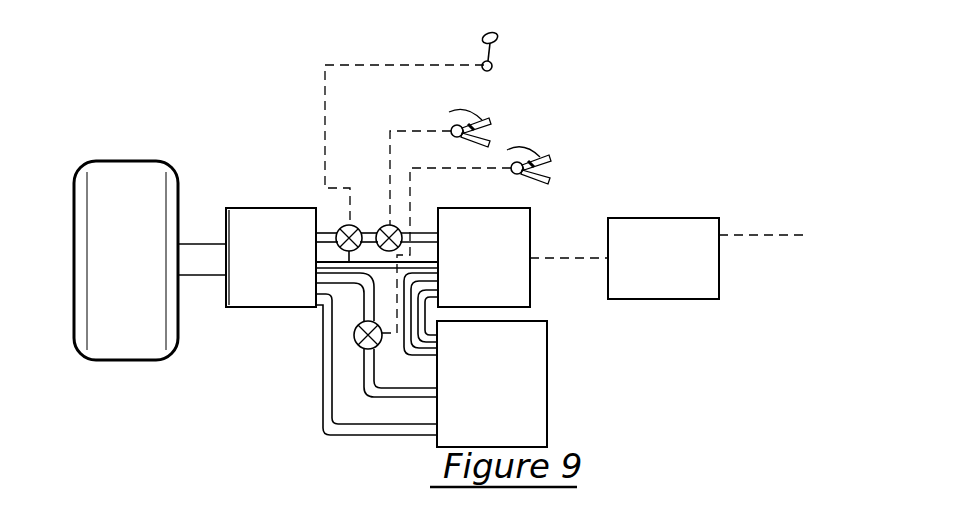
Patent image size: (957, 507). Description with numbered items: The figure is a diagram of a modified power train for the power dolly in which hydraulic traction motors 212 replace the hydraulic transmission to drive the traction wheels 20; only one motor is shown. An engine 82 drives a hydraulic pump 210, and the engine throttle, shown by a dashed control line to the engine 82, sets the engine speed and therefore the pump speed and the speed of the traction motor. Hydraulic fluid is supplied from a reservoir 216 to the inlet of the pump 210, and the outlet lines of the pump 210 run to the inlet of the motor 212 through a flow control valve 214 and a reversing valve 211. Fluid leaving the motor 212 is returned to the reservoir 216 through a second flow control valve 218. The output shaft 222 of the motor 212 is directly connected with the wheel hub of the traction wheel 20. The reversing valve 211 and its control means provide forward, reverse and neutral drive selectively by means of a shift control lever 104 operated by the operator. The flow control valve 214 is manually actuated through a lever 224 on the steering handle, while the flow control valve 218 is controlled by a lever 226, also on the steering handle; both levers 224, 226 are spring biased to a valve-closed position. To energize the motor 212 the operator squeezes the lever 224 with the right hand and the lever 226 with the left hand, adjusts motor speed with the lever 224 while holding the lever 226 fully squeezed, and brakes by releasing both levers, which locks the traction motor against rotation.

The traction wheel 20 is at (128, 161).
The output shaft 222 is at (201, 276).
The hydraulic traction motor 212 is at (288, 208).
The reversing valve 211 is at (342, 225).
The flow control valve 214 is at (385, 225).
The flow control valve 218 is at (354, 335).
The hydraulic pump 210 is at (488, 212).
The reservoir 216 is at (527, 321).
The engine 82 is at (687, 218).
The shift control lever 104 is at (497, 35).
The control lever 224 is at (484, 117).
The control lever 226 is at (545, 155).